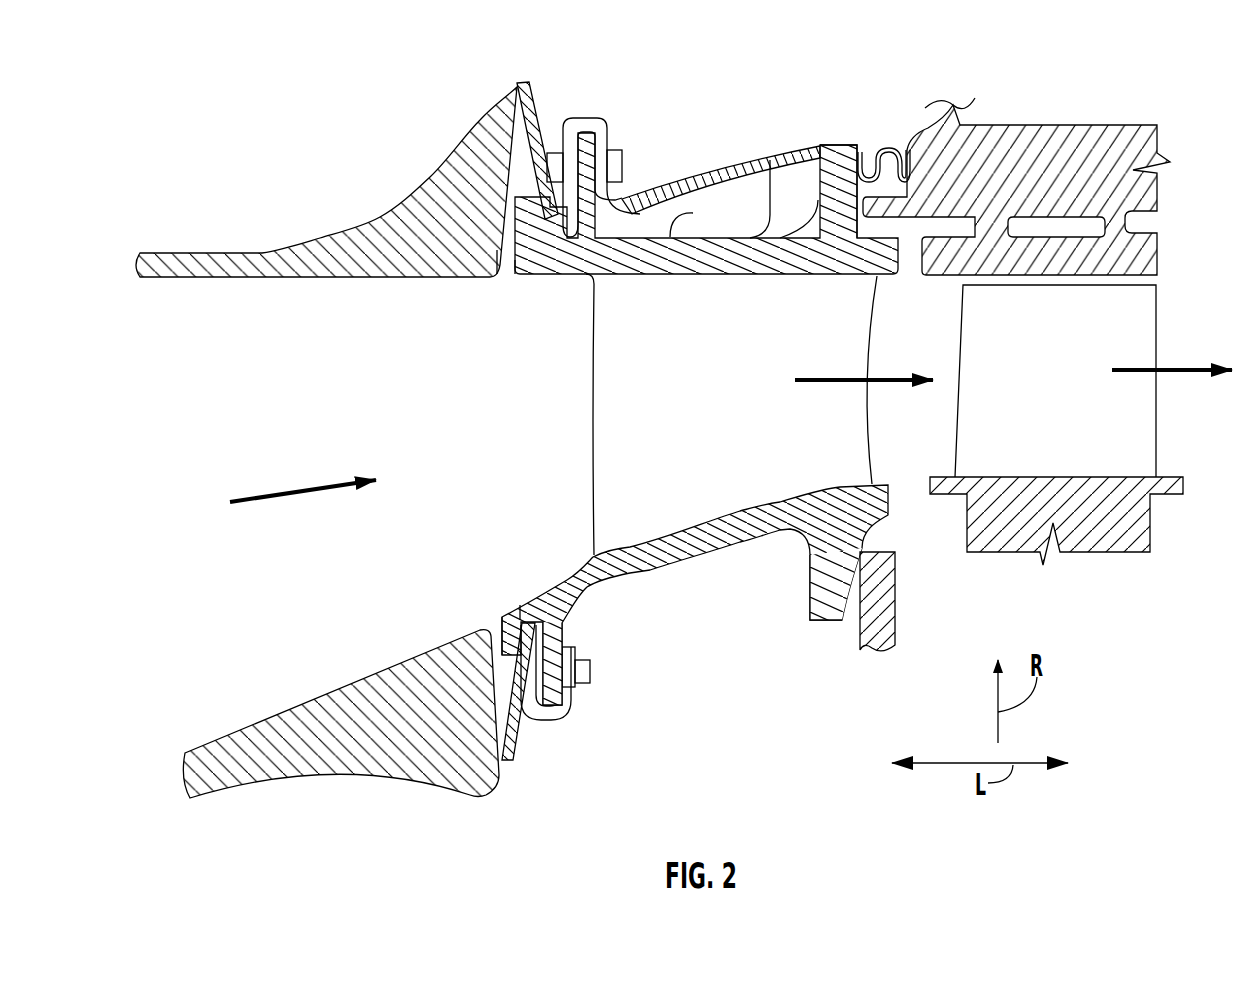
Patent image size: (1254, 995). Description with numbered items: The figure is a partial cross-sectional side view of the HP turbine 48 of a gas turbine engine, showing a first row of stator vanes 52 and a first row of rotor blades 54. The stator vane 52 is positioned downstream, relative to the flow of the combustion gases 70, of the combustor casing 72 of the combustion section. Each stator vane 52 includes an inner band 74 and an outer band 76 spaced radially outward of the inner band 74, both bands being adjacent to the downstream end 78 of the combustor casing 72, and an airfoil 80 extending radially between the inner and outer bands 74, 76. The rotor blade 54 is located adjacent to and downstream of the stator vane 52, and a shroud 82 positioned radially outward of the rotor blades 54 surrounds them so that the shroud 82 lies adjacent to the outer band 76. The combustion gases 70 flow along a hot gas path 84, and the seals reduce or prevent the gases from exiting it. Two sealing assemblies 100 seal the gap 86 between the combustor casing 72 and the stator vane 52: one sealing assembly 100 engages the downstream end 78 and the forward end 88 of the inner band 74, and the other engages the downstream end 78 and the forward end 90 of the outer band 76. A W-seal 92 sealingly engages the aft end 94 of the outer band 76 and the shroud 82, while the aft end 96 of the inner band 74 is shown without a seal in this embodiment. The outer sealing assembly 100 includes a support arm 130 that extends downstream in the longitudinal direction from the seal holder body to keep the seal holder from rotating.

The HP turbine 48 is at (196, 107).
The stator vane 52 is at (735, 118).
The rotor blade 54 is at (1157, 442).
The combustion gases 70 is at (298, 495).
The combustor casing 72 is at (385, 219).
The inner band 74 is at (700, 553).
The outer band 76 is at (695, 218).
The downstream end 78 is at (440, 120).
The airfoil 80 is at (622, 433).
The shroud 82 is at (1070, 123).
The hot gas path 84 is at (927, 346).
The gap 86 is at (507, 285).
The forward end 88 is at (546, 563).
The forward end 90 is at (557, 315).
The W-seal 92 is at (877, 125).
The aft end 94 is at (842, 110).
The aft end 96 is at (908, 525).
The sealing assembly 100 is at (580, 86).
The support arm 130 is at (682, 168).